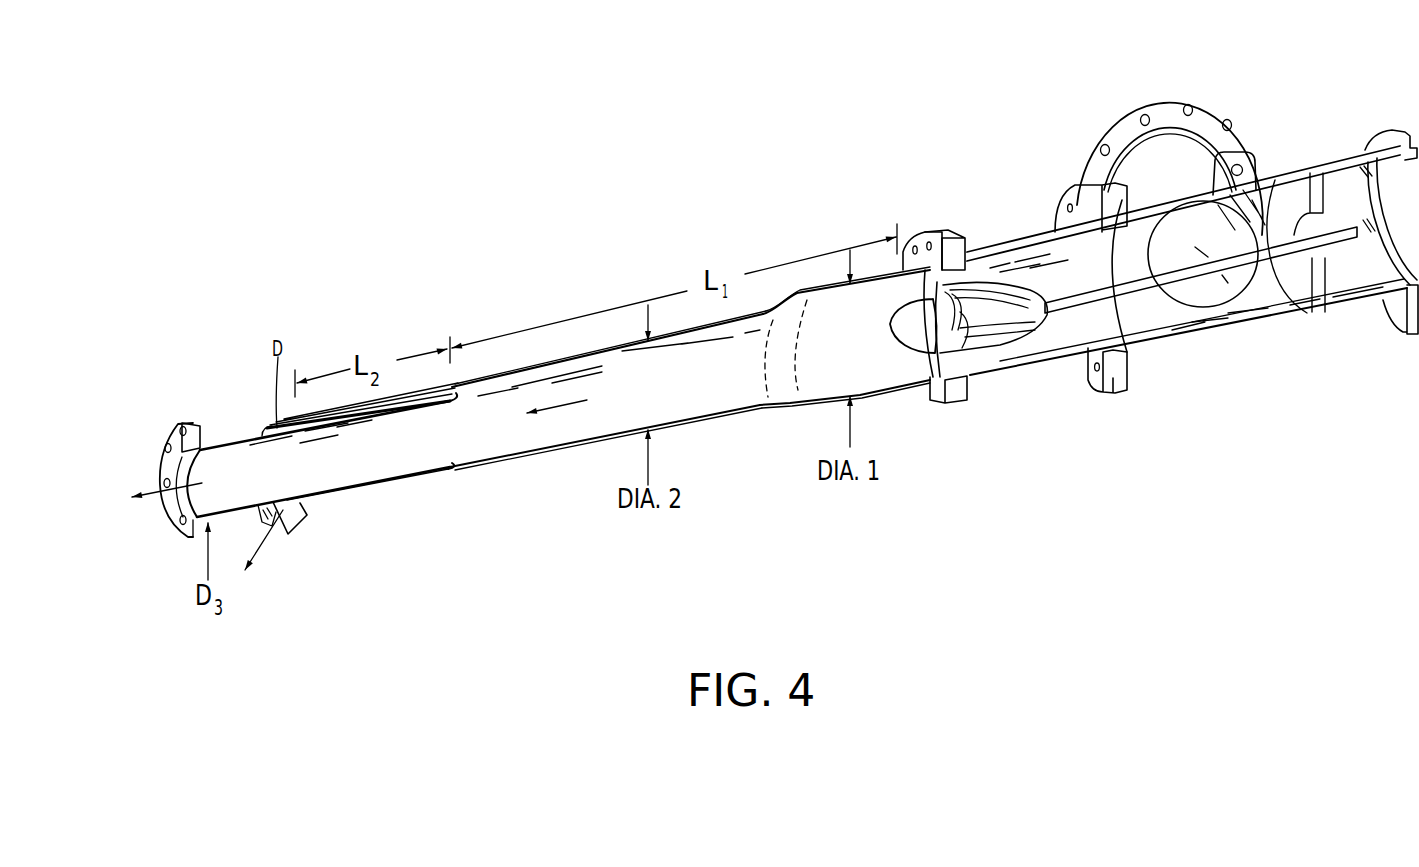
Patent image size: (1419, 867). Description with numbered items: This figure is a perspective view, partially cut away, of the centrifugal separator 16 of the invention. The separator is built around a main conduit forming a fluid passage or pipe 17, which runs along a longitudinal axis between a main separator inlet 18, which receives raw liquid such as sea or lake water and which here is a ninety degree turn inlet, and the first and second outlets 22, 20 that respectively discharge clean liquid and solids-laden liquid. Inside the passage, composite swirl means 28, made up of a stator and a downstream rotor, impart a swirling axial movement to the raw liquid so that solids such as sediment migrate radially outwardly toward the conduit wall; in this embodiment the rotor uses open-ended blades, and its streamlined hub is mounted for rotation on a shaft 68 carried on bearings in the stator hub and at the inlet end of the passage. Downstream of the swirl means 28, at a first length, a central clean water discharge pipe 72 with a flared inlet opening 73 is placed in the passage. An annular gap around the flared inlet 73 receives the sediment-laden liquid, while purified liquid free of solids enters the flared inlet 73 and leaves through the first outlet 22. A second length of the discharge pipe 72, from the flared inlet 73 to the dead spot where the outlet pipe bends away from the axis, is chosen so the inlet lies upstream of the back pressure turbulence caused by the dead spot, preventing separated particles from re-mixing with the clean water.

The centrifugal separator 16 is at (592, 330).
The pipe 17 is at (546, 452).
The main separator inlet 18 is at (1103, 145).
The second outlet 20 is at (297, 520).
The first outlet 22 is at (231, 440).
The composite swirl means 28 is at (992, 402).
The shaft 68 is at (1137, 280).
The discharge pipe 72 is at (347, 473).
The flared inlet opening 73 is at (443, 469).